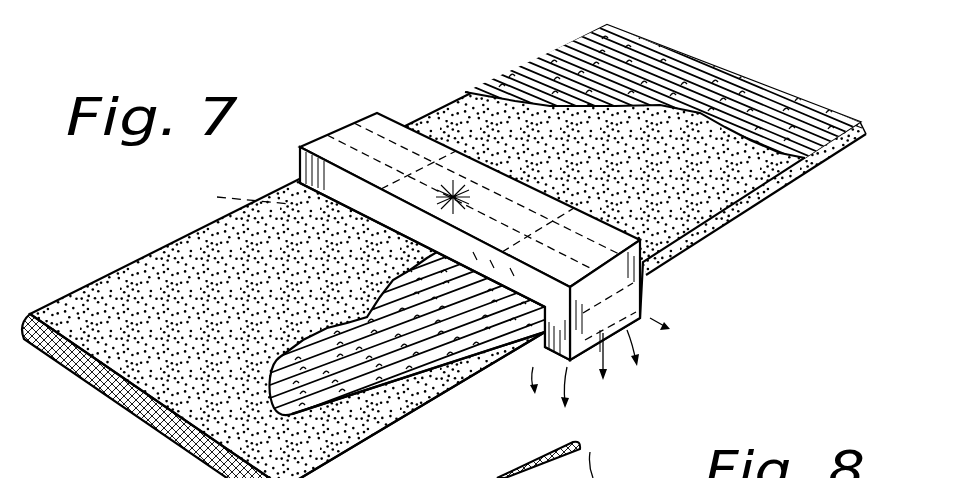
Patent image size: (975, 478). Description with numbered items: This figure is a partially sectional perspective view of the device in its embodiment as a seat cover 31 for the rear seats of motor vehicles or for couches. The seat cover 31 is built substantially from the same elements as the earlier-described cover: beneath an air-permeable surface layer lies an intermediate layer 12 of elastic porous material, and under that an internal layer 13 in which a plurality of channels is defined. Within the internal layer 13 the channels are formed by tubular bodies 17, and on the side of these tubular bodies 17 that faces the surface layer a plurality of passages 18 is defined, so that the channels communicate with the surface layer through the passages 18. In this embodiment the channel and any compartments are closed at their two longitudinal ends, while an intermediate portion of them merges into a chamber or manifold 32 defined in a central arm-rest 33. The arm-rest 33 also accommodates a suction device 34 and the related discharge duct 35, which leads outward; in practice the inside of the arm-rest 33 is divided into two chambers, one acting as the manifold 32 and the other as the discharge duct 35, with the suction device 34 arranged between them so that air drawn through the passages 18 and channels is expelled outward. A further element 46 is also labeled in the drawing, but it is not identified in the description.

The intermediate layer 12 is at (150, 287).
The internal layer 13 is at (445, 382).
The tubular body 17 is at (487, 367).
The passage 18 is at (770, 105).
The seat cover 31 is at (442, 100).
The manifold 32 is at (230, 195).
The arm-rest 33 is at (390, 133).
The suction device 34 is at (340, 130).
The discharge duct 35 is at (647, 292).
The strip 46 is at (585, 453).